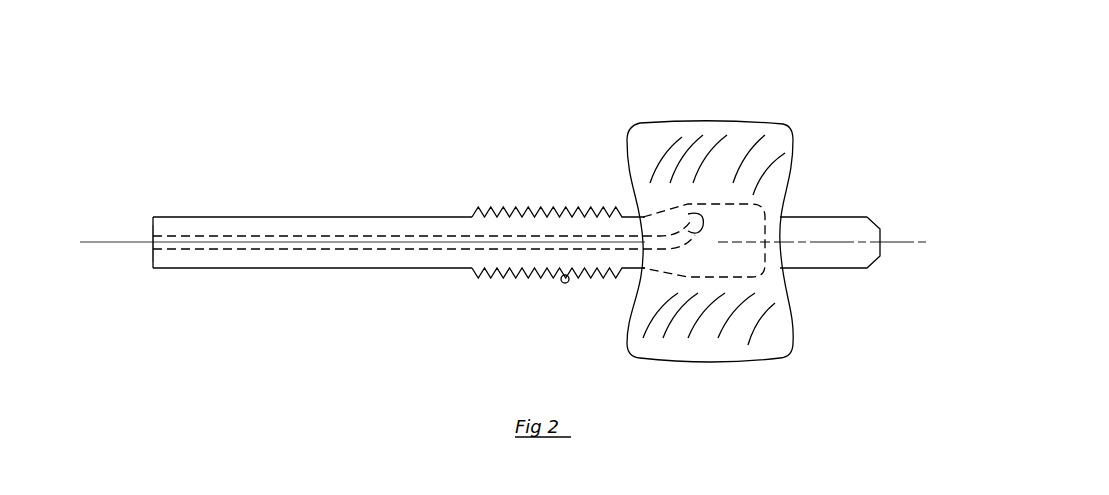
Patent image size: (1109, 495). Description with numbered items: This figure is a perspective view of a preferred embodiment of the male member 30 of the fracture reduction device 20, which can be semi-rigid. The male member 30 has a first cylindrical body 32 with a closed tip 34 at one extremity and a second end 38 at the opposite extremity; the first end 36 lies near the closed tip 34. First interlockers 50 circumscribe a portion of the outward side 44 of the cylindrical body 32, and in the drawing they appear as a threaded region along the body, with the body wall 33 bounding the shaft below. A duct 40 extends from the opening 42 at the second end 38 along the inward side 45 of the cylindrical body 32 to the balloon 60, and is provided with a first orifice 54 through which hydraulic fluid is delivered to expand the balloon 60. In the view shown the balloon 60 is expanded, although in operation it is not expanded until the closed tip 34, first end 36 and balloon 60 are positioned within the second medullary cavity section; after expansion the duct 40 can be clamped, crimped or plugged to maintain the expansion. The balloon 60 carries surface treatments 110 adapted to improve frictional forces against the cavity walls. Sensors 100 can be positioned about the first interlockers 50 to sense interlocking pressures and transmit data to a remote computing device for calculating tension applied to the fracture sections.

The fracture reduction device 20 is at (793, 215).
The male member 30 is at (384, 231).
The first cylindrical body 32 is at (216, 160).
The shaft wall 33 is at (312, 298).
The closed tip 34 is at (880, 168).
The first end 36 is at (871, 143).
The second end 38 is at (115, 209).
The duct 40 is at (421, 290).
The opening 42 is at (113, 234).
The outward side 44 is at (366, 184).
The inward side 45 is at (405, 265).
The first interlockers 50 is at (558, 197).
The first orifice 54 is at (760, 151).
The balloon 60 is at (699, 243).
The sensors 100 is at (545, 306).
The surface treatments 110 is at (695, 132).